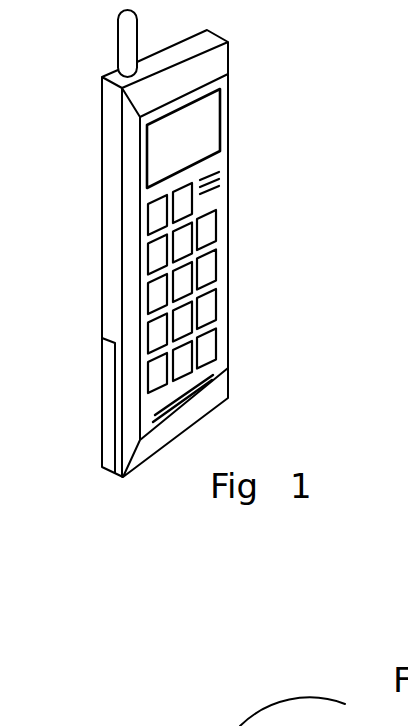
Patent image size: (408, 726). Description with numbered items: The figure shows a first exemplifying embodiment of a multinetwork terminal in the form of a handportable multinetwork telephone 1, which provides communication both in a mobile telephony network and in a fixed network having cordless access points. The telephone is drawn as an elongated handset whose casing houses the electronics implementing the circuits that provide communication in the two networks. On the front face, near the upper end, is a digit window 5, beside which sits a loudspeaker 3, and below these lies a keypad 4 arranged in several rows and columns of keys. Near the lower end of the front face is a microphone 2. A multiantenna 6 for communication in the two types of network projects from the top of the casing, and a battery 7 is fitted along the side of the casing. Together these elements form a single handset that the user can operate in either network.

The multinetwork telephone 1 is at (102, 243).
The microphone 2 is at (213, 378).
The loudspeaker 3 is at (223, 177).
The keypad 4 is at (206, 306).
The digit window 5 is at (205, 125).
The multiantenna 6 is at (123, 40).
The battery 7 is at (105, 407).